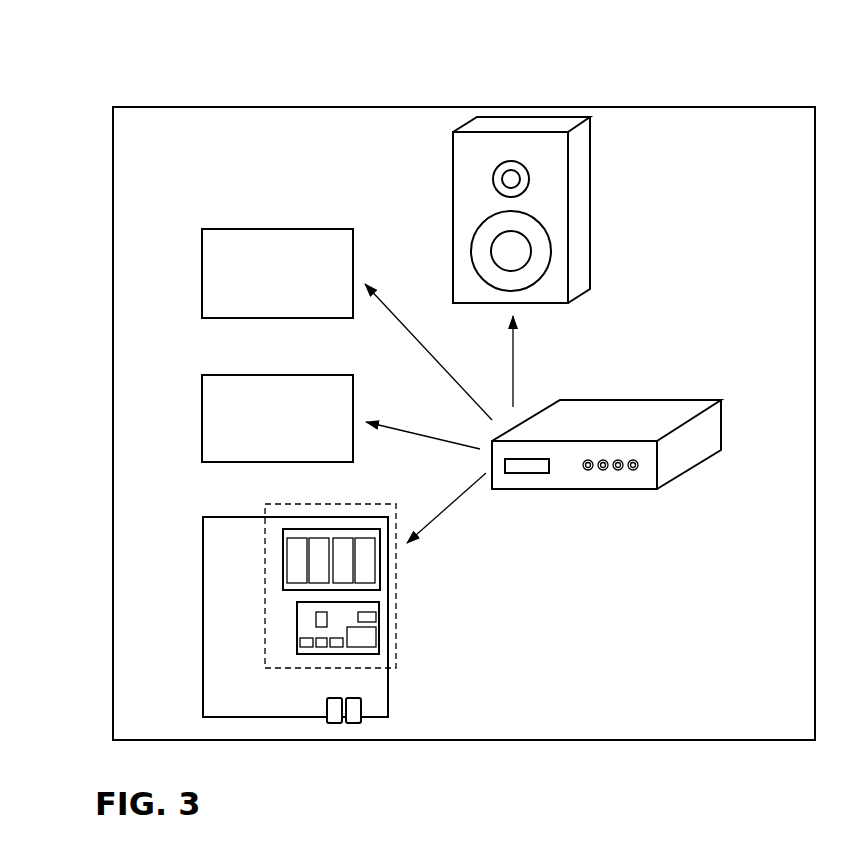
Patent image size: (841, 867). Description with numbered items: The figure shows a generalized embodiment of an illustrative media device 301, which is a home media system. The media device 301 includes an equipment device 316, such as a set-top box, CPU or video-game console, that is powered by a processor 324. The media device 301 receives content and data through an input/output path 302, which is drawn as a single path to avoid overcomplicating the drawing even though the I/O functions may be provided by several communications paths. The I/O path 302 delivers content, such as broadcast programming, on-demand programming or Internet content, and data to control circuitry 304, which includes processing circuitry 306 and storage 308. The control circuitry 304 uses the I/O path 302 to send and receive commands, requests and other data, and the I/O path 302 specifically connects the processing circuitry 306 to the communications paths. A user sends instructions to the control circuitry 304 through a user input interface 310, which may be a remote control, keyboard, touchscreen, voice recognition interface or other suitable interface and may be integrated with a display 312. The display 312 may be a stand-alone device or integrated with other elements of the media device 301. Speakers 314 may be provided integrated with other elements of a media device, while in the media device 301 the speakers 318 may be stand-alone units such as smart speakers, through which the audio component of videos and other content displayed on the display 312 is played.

The media device 301 is at (681, 59).
The I/O path 302 is at (333, 716).
The control circuitry 304 is at (250, 638).
The processing circuitry 306 is at (285, 615).
The storage 308 is at (292, 518).
The user input interface 310 is at (190, 268).
The display 312 is at (190, 394).
The speakers 314 is at (441, 164).
The equipment device 316 is at (641, 400).
The speakers 318 is at (591, 235).
The processor 324 is at (388, 689).